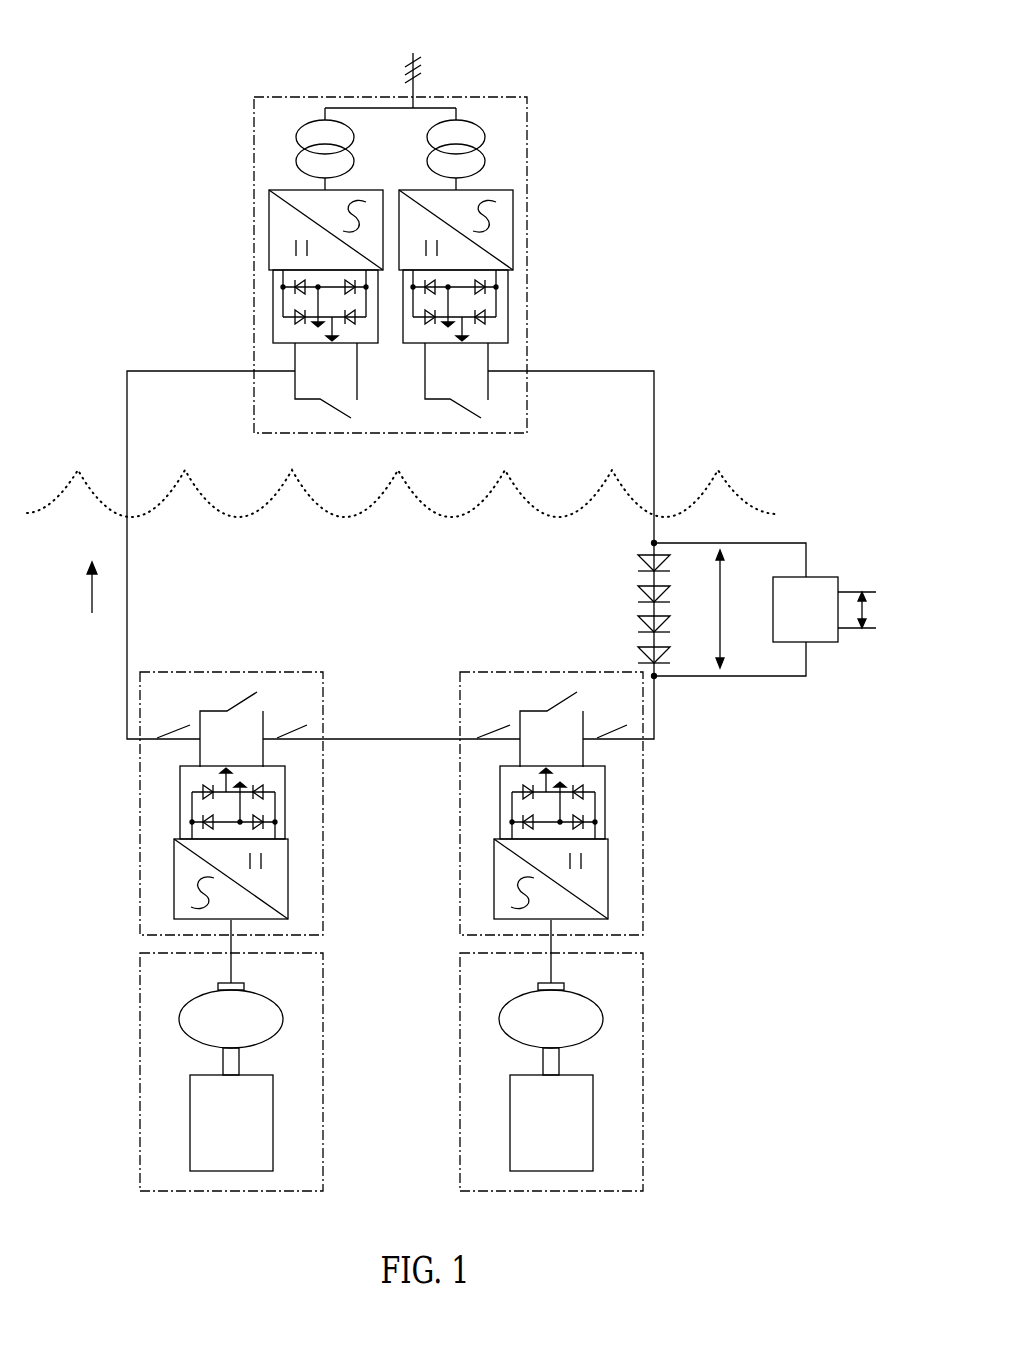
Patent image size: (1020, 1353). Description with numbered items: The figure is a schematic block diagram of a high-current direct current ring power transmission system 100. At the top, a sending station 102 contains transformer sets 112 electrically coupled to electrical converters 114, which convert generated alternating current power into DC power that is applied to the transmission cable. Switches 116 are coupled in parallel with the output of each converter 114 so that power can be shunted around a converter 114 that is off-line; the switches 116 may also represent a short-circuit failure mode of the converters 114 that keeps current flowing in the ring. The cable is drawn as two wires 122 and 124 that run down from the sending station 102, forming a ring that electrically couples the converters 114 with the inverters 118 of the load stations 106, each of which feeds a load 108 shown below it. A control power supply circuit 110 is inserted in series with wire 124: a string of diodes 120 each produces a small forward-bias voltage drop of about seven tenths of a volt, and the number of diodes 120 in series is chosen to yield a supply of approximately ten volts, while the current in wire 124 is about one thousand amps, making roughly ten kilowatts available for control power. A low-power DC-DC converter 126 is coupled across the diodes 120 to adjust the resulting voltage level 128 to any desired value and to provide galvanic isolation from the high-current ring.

The DC ring power transmission system 100 is at (163, 30).
The sending station 102 is at (513, 97).
The load station 106 is at (323, 805).
The load 108 is at (323, 1028).
The control power supply circuit 110 is at (790, 519).
The transformer set 112 is at (310, 121).
The electrical converter 114 is at (269, 214).
The switch 116 is at (293, 400).
The inverter 118 is at (288, 893).
The diode 120 is at (611, 605).
The wire 122 is at (127, 413).
The wire 124 is at (655, 428).
The low-power DC-DC converter 126 is at (830, 577).
The voltage level 128 is at (867, 611).